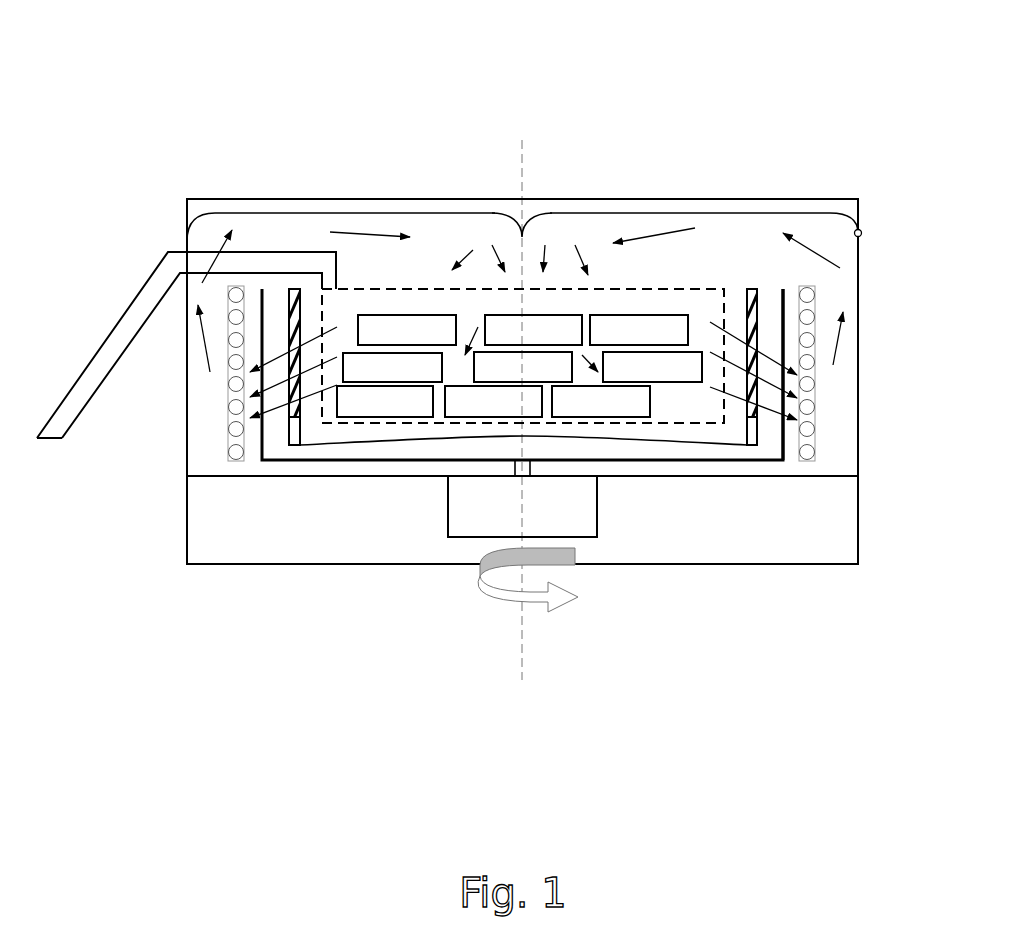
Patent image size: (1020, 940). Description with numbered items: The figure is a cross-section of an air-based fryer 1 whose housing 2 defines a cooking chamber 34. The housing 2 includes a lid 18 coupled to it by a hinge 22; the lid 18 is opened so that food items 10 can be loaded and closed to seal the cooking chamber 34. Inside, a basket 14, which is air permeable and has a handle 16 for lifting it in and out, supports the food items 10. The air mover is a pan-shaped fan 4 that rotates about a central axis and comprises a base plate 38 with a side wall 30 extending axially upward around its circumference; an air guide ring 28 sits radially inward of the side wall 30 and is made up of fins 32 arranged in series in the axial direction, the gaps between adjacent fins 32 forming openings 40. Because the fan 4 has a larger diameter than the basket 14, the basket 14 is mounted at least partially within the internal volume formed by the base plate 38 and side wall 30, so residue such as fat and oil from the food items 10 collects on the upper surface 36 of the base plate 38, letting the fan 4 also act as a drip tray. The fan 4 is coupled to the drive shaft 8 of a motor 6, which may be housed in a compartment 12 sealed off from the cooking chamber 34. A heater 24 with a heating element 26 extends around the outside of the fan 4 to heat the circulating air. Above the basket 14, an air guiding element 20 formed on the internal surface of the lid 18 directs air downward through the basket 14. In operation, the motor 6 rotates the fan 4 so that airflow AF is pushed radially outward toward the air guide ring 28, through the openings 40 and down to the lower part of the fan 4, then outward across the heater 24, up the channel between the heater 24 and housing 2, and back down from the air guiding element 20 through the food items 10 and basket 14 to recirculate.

The air-based fryer 1 is at (256, 108).
The housing 2 is at (860, 325).
The fan 4 is at (335, 453).
The motor 6 is at (447, 518).
The drive shaft 8 is at (560, 537).
The food items 10 is at (642, 417).
The compartment 12 is at (213, 541).
The basket 14 is at (568, 289).
The handle 16 is at (105, 338).
The lid 18 is at (205, 199).
The air guiding element 20 is at (518, 228).
The hinge 22 is at (861, 230).
The heater 24 is at (225, 442).
The heating element 26 is at (227, 410).
The air guide ring 28 is at (747, 435).
The side wall 30 is at (783, 440).
The fins 32 is at (818, 407).
The cooking chamber 34 is at (730, 248).
The upper surface 36 is at (402, 443).
The base plate 38 is at (710, 453).
The openings 40 is at (753, 323).
The airflow AF is at (203, 338).